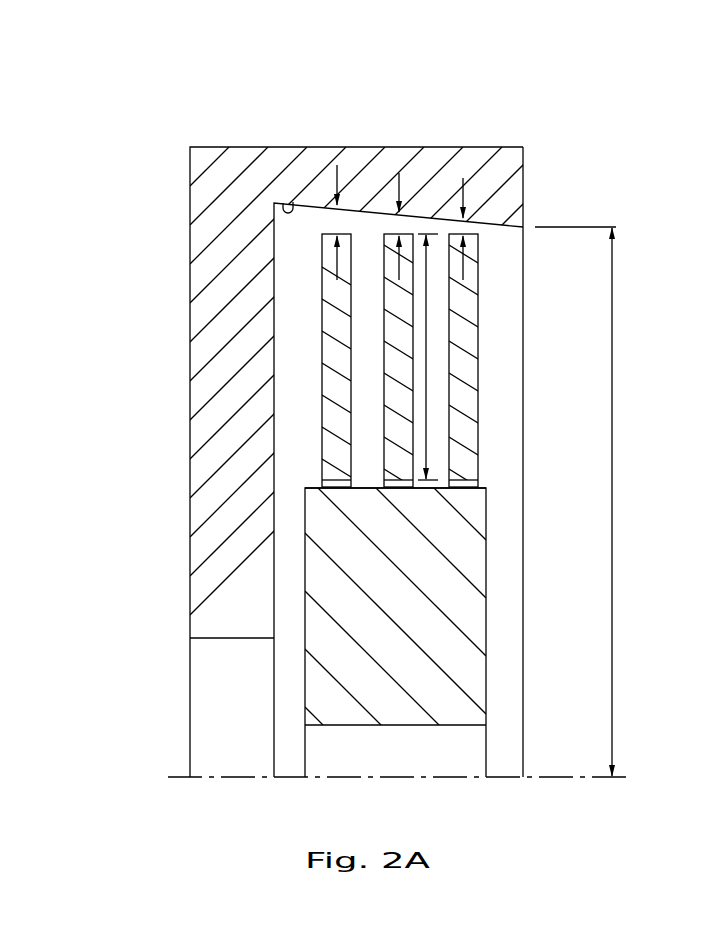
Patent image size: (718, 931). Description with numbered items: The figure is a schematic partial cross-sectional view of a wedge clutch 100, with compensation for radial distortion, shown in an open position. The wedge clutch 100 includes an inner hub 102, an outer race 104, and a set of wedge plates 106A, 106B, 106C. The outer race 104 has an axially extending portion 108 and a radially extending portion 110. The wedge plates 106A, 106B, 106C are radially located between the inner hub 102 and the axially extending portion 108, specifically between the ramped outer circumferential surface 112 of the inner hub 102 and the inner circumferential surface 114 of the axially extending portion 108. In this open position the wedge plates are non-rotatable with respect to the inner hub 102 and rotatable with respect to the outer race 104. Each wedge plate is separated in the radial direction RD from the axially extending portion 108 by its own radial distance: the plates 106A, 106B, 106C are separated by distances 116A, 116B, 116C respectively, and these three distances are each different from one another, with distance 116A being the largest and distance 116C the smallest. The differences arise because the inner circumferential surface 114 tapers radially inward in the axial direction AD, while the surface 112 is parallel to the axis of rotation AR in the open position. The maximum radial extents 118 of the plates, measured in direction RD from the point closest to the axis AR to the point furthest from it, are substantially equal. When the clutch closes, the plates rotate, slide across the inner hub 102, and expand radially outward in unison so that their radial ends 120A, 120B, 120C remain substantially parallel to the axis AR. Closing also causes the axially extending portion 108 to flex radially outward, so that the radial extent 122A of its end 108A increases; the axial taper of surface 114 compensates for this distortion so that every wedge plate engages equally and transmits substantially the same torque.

The wedge clutch 100 is at (167, 203).
The inner hub 102 is at (489, 677).
The outer race 104 is at (247, 143).
The wedge plate 106A is at (322, 287).
The wedge plate 106B is at (385, 368).
The wedge plate 106C is at (478, 327).
The axially extending portion 108 is at (283, 203).
The end of axially extending portion 108A is at (523, 162).
The radially extending portion 110 is at (212, 450).
The ramped outer circumferential surface 112 is at (435, 487).
The inner circumferential surface 114 is at (290, 203).
The radial distance 116A is at (340, 168).
The radial distance 116B is at (405, 172).
The radial distance 116C is at (465, 186).
The maximum radial extent 118 is at (427, 392).
The radial end 120A is at (333, 240).
The radial end 120B is at (392, 234).
The radial end 120C is at (457, 236).
The radial extent 122A is at (612, 562).
The axis of rotation AR is at (199, 778).
The radial direction RD is at (646, 682).
The axial direction AD is at (588, 822).